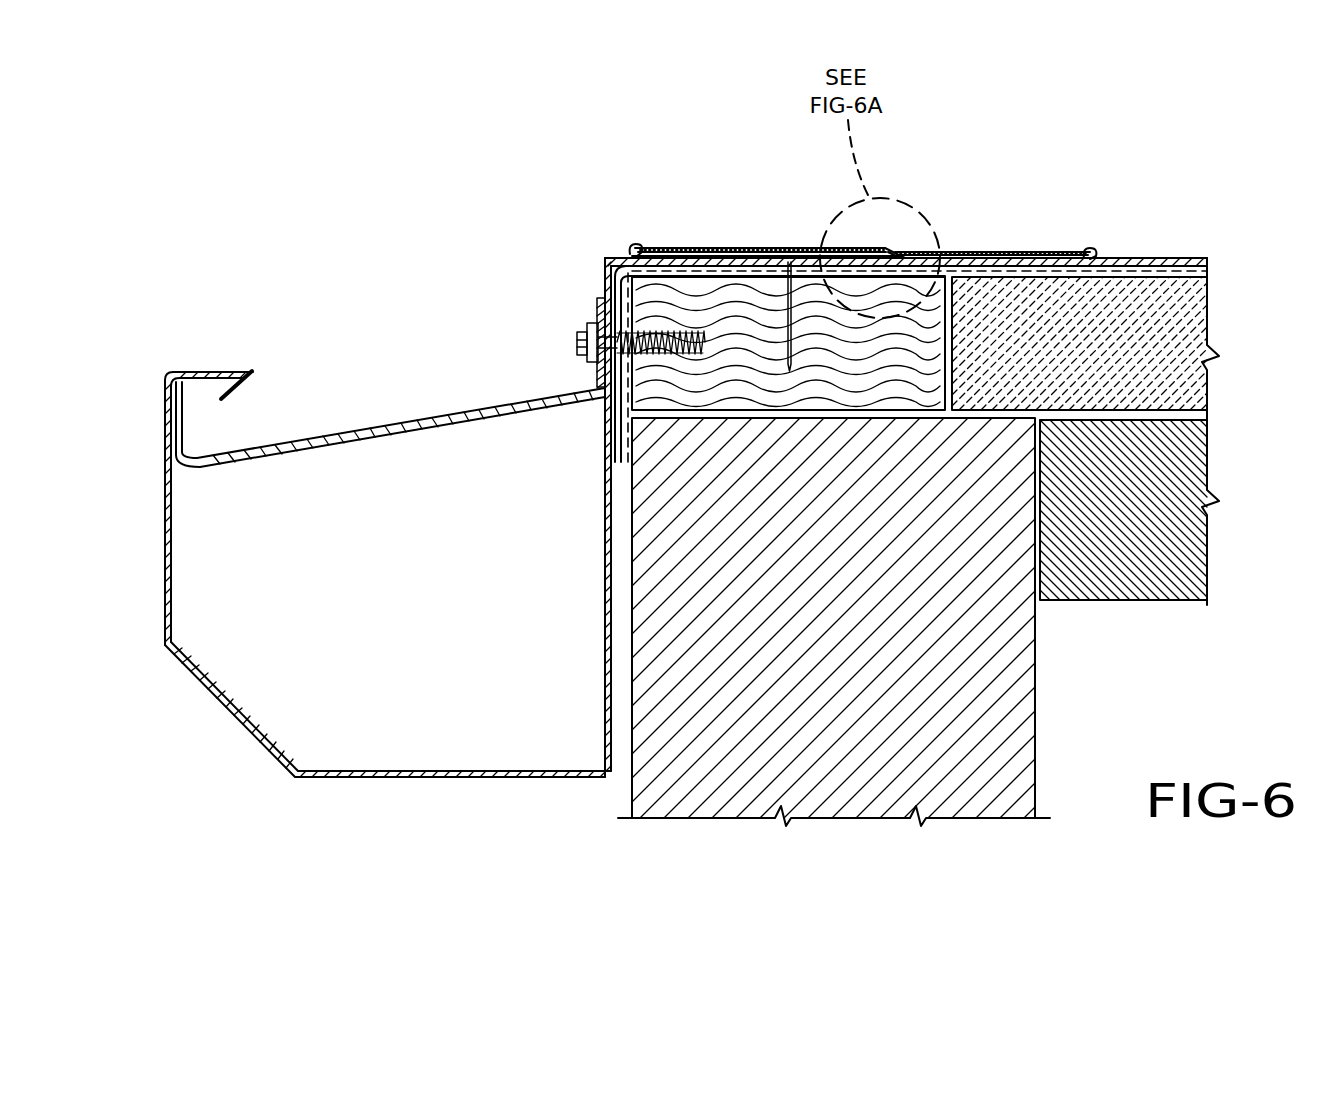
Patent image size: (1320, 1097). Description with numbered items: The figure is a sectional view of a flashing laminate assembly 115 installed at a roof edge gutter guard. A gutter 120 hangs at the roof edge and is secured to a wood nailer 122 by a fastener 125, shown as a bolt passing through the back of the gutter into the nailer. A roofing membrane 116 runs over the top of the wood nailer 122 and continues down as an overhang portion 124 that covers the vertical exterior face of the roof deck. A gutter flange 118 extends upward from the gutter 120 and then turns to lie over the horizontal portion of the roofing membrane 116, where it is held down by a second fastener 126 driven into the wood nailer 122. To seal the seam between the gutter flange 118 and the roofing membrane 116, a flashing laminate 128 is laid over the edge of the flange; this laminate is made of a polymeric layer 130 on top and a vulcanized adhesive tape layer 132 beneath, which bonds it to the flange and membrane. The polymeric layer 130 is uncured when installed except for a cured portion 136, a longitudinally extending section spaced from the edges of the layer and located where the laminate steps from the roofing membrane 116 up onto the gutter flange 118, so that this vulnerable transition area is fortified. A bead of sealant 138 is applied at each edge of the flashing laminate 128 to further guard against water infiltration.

The flashing laminate assembly 115 is at (772, 192).
The roofing membrane 116 is at (1171, 256).
The gutter flange 118 is at (608, 256).
The gutter 120 is at (210, 698).
The wood nailer 122 is at (873, 393).
The overhang portion 124 is at (617, 386).
The fastener 125 is at (716, 343).
The fastener 126 is at (791, 328).
The flashing laminate 128 is at (964, 243).
The polymeric layer 130 is at (1020, 255).
The vulcanized adhesive tape layer 132 is at (700, 255).
The cured portion 136 is at (905, 255).
The sealant 138 is at (637, 247).